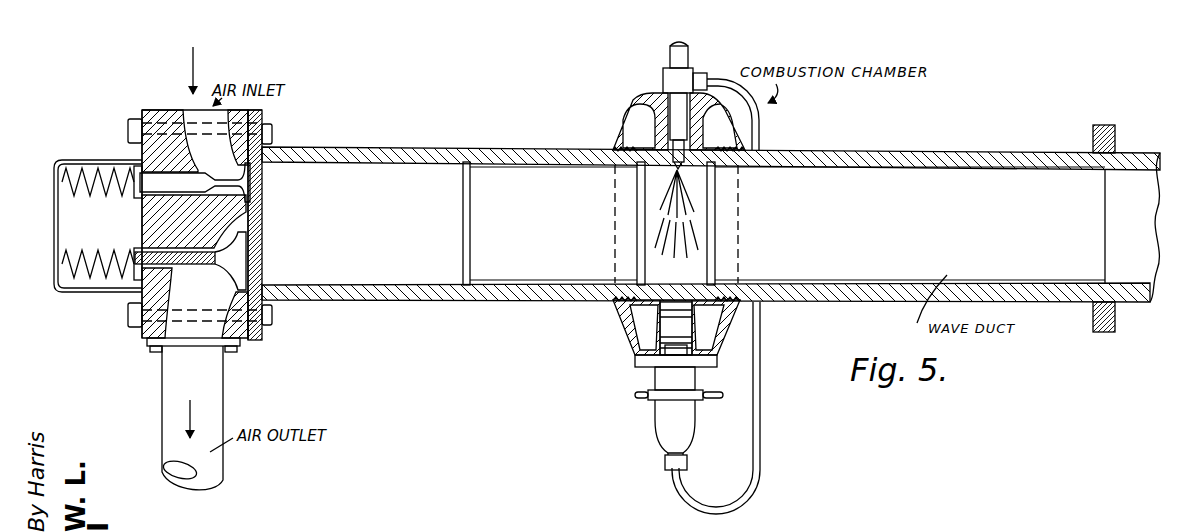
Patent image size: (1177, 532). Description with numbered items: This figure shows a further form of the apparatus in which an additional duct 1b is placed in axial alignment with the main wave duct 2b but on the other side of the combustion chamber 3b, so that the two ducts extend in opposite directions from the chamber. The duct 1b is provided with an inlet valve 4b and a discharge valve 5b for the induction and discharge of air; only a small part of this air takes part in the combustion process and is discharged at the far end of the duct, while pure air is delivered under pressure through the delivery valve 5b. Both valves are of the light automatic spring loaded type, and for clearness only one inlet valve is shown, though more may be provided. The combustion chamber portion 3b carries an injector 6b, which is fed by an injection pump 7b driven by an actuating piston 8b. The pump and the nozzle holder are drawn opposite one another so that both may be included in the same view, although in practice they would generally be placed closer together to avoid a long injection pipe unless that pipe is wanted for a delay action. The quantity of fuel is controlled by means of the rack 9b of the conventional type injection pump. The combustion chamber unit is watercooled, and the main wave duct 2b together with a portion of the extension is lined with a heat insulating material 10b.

The duct 1b is at (392, 230).
The main wave duct 2b is at (898, 244).
The combustion chamber 3b is at (687, 283).
The inlet valve 4b is at (250, 181).
The discharge valve 5b is at (250, 258).
The injector 6b is at (663, 77).
The injection pump 7b is at (545, 433).
The actuating piston 8b is at (668, 325).
The rack 9b is at (635, 394).
The heat insulating material 10b is at (527, 150).